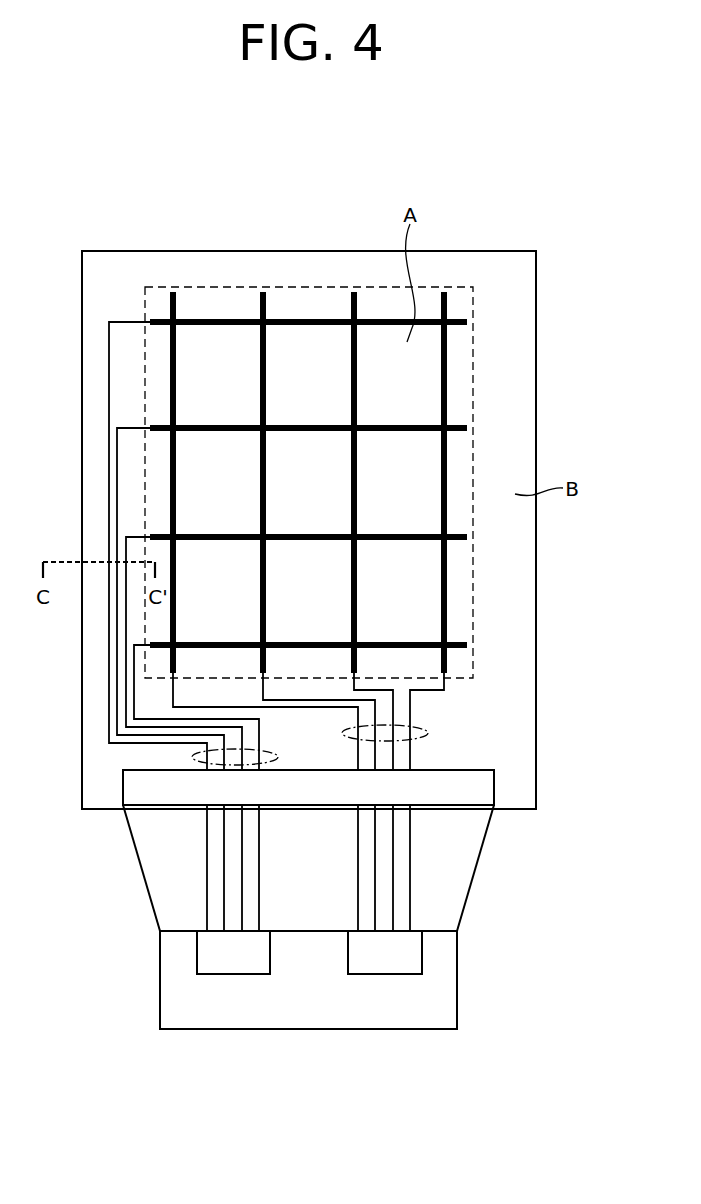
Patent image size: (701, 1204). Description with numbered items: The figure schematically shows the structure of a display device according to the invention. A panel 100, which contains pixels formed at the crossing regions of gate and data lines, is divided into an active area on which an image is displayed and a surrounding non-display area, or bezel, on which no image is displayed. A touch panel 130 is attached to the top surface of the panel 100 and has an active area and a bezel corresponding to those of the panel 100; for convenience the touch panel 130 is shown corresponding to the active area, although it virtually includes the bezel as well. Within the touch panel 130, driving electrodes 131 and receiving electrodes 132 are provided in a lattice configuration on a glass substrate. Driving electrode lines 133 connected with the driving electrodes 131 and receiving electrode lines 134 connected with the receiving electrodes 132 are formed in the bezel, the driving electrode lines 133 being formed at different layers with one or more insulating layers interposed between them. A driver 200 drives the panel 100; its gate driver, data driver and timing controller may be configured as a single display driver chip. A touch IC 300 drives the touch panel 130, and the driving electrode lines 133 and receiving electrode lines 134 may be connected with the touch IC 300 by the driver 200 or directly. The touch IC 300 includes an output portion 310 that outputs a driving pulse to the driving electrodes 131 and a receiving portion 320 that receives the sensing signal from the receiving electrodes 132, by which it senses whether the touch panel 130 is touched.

The panel 100 is at (251, 251).
The touch panel 130 is at (310, 482).
The driving electrodes 131 is at (203, 535).
The receiving electrodes 132 is at (447, 588).
The driving electrode lines 133 is at (196, 753).
The receiving electrode lines 134 is at (415, 728).
The driver 200 is at (494, 783).
The touch IC 300 is at (334, 917).
The output portion 310 is at (233, 952).
The receiving portion 320 is at (385, 952).